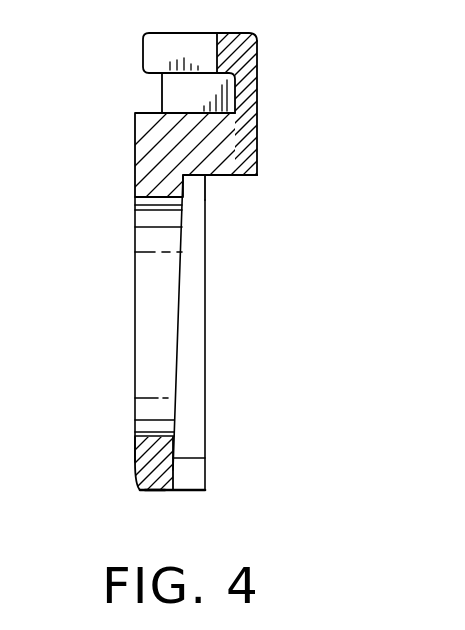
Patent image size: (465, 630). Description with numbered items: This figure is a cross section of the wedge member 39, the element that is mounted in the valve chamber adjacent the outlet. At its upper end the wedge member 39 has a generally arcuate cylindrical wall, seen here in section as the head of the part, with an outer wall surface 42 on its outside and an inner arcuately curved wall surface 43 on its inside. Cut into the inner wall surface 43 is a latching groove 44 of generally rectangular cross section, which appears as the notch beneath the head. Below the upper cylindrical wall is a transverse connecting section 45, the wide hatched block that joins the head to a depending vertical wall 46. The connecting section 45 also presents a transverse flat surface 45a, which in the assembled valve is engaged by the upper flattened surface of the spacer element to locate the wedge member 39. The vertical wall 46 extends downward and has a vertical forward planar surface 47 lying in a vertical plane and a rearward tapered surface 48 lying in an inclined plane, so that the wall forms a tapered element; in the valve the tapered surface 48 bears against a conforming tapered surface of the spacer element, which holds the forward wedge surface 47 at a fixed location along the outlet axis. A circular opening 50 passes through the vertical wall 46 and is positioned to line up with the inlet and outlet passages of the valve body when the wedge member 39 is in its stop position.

The wedge member 39 is at (205, 329).
The outer wall surface 42 is at (257, 122).
The inner arcuately curved wall surface 43 is at (170, 48).
The latching groove 44 is at (232, 91).
The transverse connecting section 45 is at (135, 164).
The transverse flat surface 45a is at (213, 178).
The depending vertical wall 46 is at (154, 492).
The vertical forward planar surface 47 is at (135, 461).
The rearward tapered surface 48 is at (205, 458).
The circular opening 50 is at (163, 201).